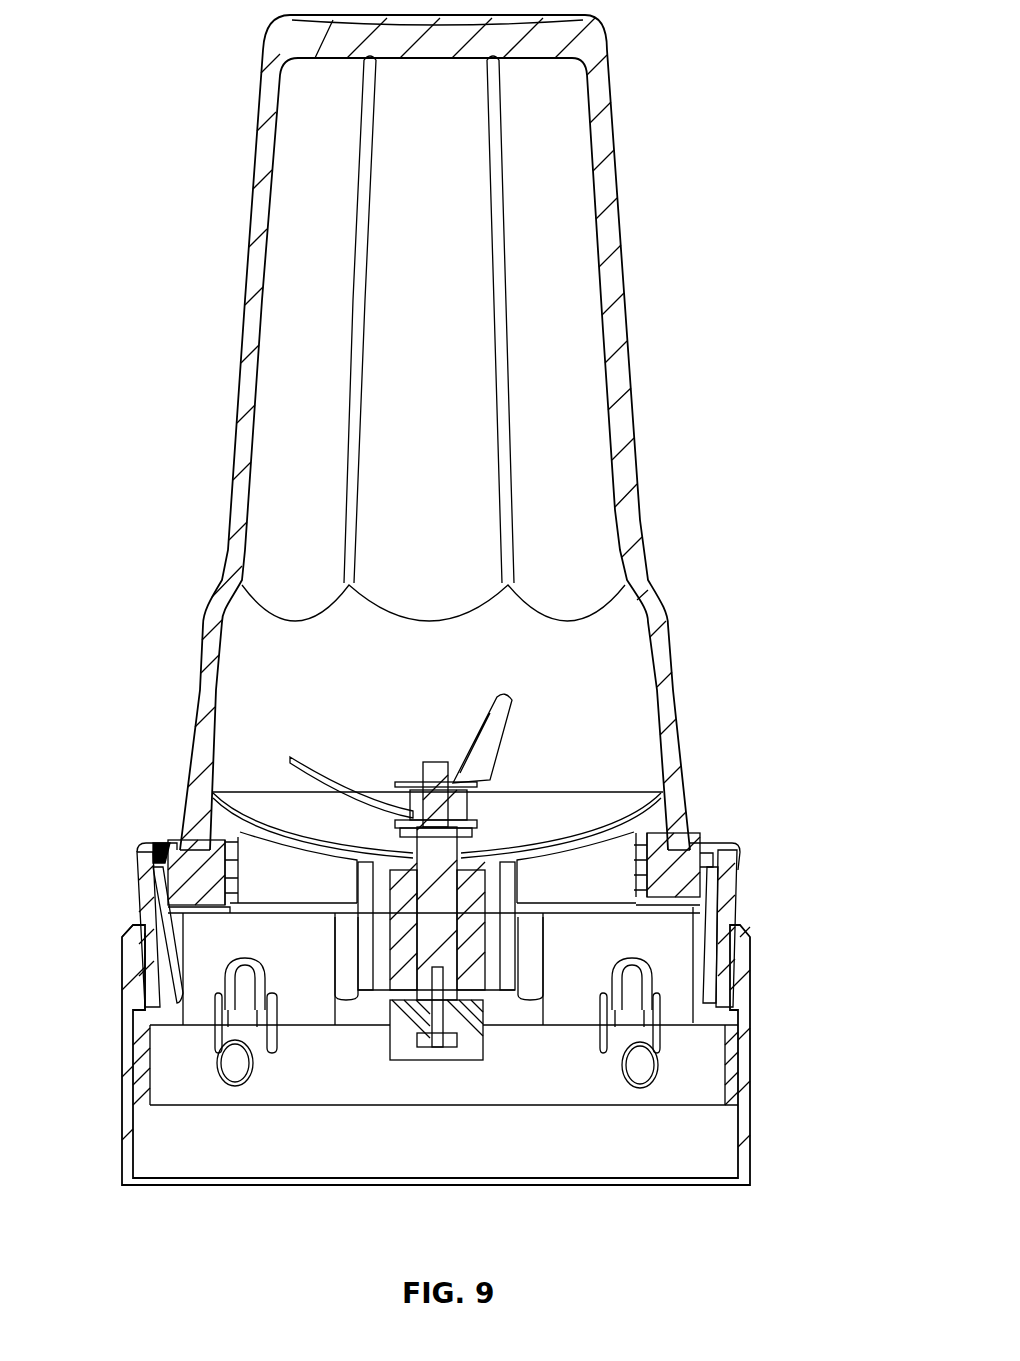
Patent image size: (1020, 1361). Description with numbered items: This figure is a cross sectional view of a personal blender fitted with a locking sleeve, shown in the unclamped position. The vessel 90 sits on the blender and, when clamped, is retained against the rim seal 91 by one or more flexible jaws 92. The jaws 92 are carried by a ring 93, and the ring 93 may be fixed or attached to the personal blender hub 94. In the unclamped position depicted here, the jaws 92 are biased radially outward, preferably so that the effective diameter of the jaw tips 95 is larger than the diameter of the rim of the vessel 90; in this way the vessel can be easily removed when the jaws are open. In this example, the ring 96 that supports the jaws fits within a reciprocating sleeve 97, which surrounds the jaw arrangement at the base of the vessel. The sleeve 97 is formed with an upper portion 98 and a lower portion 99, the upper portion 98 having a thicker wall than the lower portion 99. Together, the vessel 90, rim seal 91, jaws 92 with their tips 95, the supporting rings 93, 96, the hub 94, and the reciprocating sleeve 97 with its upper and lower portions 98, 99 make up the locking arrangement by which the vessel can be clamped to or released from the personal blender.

The vessel 90 is at (620, 320).
The rim seal 91 is at (660, 863).
The flexible jaws 92 is at (727, 897).
The ring 93 is at (720, 962).
The personal blender hub 94 is at (248, 945).
The jaw tips 95 is at (700, 847).
The ring 96 is at (730, 1055).
The reciprocating sleeve 97 is at (135, 997).
The upper portion 98 is at (132, 938).
The lower portion 99 is at (132, 1062).